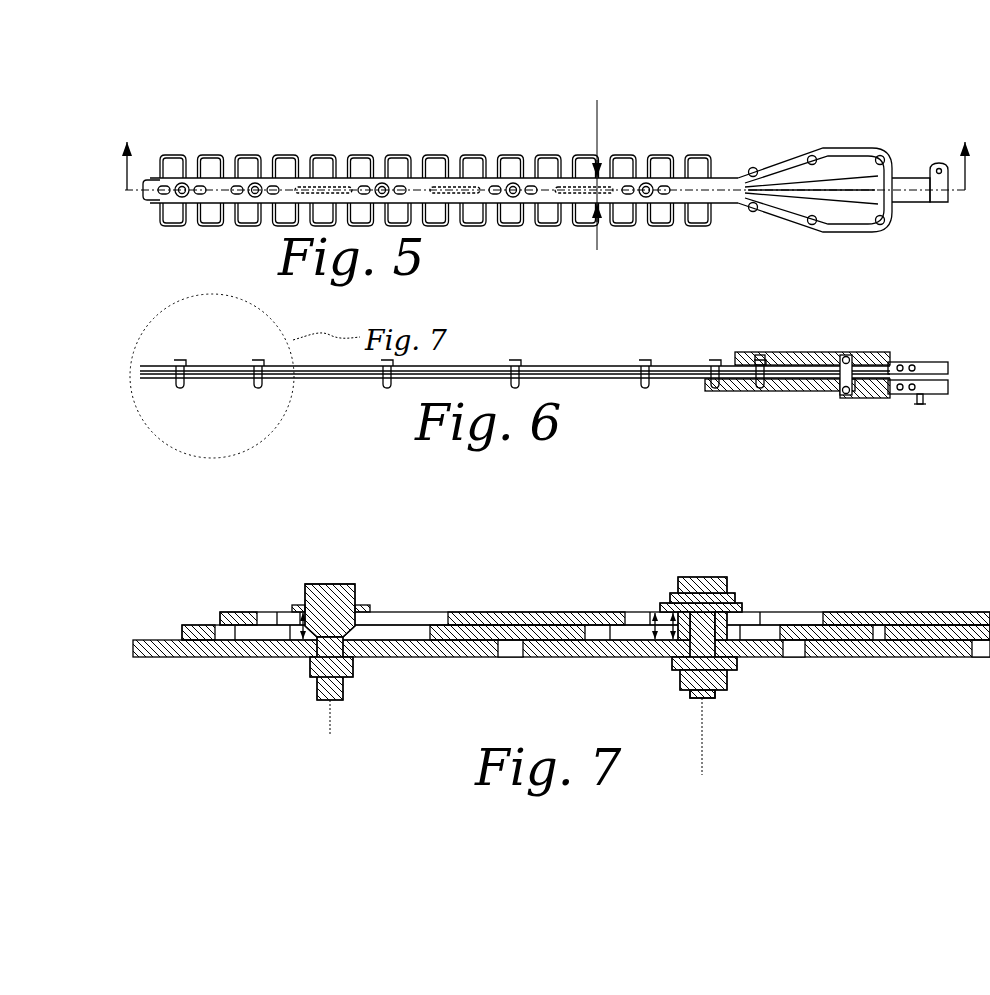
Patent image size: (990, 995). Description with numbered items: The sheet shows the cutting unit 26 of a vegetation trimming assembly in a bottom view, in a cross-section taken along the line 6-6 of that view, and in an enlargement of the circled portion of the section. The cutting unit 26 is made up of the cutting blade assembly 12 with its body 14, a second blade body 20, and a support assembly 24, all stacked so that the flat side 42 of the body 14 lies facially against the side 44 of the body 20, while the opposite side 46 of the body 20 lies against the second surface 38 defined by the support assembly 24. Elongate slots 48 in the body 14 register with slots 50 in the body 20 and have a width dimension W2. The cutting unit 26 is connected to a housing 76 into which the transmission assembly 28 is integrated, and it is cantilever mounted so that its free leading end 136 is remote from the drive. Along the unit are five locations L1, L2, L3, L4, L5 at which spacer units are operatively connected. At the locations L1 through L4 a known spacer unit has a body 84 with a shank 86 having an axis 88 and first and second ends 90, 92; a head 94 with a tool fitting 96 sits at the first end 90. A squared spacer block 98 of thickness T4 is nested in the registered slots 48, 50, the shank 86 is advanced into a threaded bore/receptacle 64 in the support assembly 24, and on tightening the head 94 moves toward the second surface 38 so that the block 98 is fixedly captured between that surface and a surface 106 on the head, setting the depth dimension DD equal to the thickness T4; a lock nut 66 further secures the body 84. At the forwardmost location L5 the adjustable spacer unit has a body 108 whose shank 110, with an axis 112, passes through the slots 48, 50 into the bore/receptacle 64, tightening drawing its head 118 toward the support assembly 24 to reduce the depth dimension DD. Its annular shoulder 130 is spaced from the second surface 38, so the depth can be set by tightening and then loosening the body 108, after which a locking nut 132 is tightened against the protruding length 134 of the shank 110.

In FIG. 5, the section line 6 is at (545, 143).
In FIG. 5, the cutting blade assembly 12 is at (428, 178).
In FIG. 5, the body 14 is at (385, 162).
In FIG. 7, the body 14 is at (600, 625).
In FIG. 5, the cutting unit 26 is at (371, 114).
In FIG. 6, the transmission assembly 28 is at (908, 360).
In FIG. 5, the housing 76 is at (846, 236).
In FIG. 6, the housing 76 is at (890, 350).
In FIG. 5, the free leading end 136 is at (152, 147).
In FIG. 5, the location L1 is at (652, 178).
In FIG. 5, the location L2 is at (520, 178).
In FIG. 5, the location L3 is at (390, 178).
In FIG. 5, the location L4 is at (266, 178).
In FIG. 5, the location L5 is at (188, 178).
In FIG. 5, the width dimension W2 is at (600, 170).
In FIG. 7, the body 20 is at (190, 625).
In FIG. 7, the support assembly 24 is at (160, 658).
In FIG. 7, the second surface 38 is at (963, 612).
In FIG. 7, the flat side 42 is at (906, 658).
In FIG. 7, the side 44 is at (890, 613).
In FIG. 7, the side 46 is at (862, 658).
In FIG. 7, the elongate slots 48 is at (440, 612).
In FIG. 7, the elongate slots 50 is at (246, 612).
In FIG. 7, the threaded bore/receptacle 64 is at (317, 657).
In FIG. 7, the lock nut 66 is at (735, 665).
In FIG. 7, the body 84 is at (690, 675).
In FIG. 7, the shank 86 is at (697, 698).
In FIG. 7, the axis 88 is at (703, 748).
In FIG. 7, the first end 90 is at (668, 603).
In FIG. 7, the second end 92 is at (722, 696).
In FIG. 7, the head 94 is at (718, 577).
In FIG. 7, the fitting 96 is at (698, 577).
In FIG. 7, the spacer block 98 is at (748, 628).
In FIG. 7, the surface 106 is at (750, 613).
In FIG. 7, the body 108 is at (313, 686).
In FIG. 7, the shank 110 is at (320, 700).
In FIG. 7, the axis 112 is at (336, 718).
In FIG. 7, the head 118 is at (350, 583).
In FIG. 7, the annular shoulder/surface 130 is at (356, 660).
In FIG. 7, the locking nut 132 is at (355, 672).
In FIG. 7, the protruding length 134 is at (330, 702).
In FIG. 7, the depth dimension DD is at (300, 628).
In FIG. 7, the thickness T4 is at (672, 641).